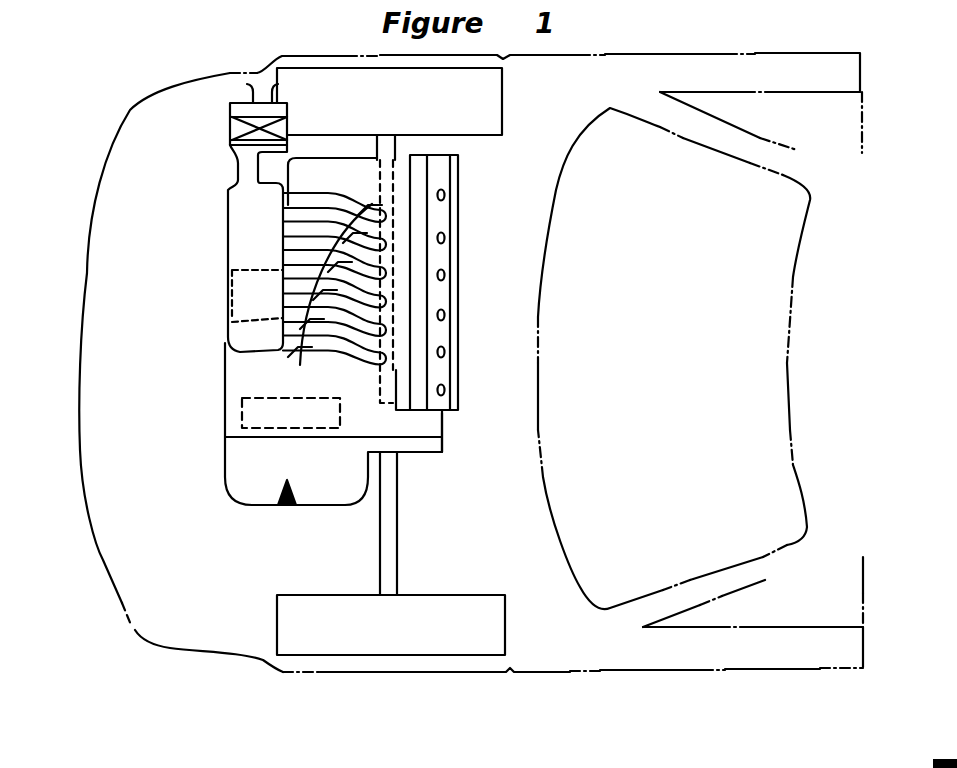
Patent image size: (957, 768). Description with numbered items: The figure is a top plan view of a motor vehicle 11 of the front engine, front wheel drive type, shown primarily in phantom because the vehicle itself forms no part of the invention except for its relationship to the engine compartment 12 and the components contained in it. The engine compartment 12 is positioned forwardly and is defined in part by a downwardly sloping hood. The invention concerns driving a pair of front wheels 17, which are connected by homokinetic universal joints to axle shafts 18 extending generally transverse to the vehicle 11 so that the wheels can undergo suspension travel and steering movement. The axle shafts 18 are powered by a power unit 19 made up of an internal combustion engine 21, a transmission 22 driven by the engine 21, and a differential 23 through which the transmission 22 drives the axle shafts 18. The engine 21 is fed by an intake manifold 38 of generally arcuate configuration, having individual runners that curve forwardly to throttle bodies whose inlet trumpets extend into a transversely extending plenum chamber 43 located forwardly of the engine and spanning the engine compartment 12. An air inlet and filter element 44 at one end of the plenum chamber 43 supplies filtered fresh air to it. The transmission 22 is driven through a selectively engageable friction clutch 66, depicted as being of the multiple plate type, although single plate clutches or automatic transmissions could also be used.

The motor vehicle 11 is at (163, 575).
The engine compartment 12 is at (191, 498).
The front wheels 17 is at (493, 108).
The axle shafts 18 is at (388, 145).
The power unit 19 is at (287, 505).
The internal combustion engine 21 is at (457, 249).
The transmission 22 is at (335, 497).
The differential 23 is at (442, 430).
The intake manifold 38 is at (334, 294).
The plenum chamber 43 is at (225, 227).
The air inlet and filter element 44 is at (232, 127).
The friction clutch 66 is at (240, 423).